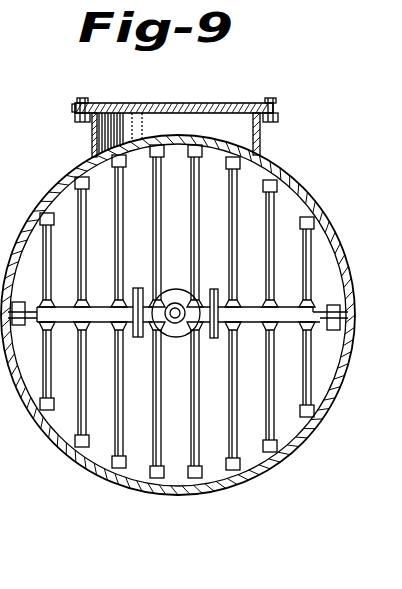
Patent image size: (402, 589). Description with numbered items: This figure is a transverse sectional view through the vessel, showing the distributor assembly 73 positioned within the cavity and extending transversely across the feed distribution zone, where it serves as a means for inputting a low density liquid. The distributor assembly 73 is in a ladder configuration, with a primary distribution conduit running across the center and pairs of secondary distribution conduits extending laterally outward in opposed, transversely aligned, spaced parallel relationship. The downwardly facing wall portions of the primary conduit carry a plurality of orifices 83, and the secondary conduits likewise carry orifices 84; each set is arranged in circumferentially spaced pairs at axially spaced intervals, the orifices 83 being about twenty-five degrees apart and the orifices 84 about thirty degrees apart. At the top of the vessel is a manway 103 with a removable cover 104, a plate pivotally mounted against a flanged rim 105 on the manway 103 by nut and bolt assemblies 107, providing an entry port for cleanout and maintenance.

The distributor assembly 73 is at (65, 422).
The orifices 83 is at (139, 288).
The orifices 84 is at (214, 289).
The manway 103 is at (118, 126).
The removable cover 104 is at (185, 104).
The flanged rim 105 is at (73, 112).
The nut and bolt assemblies 107 is at (82, 98).